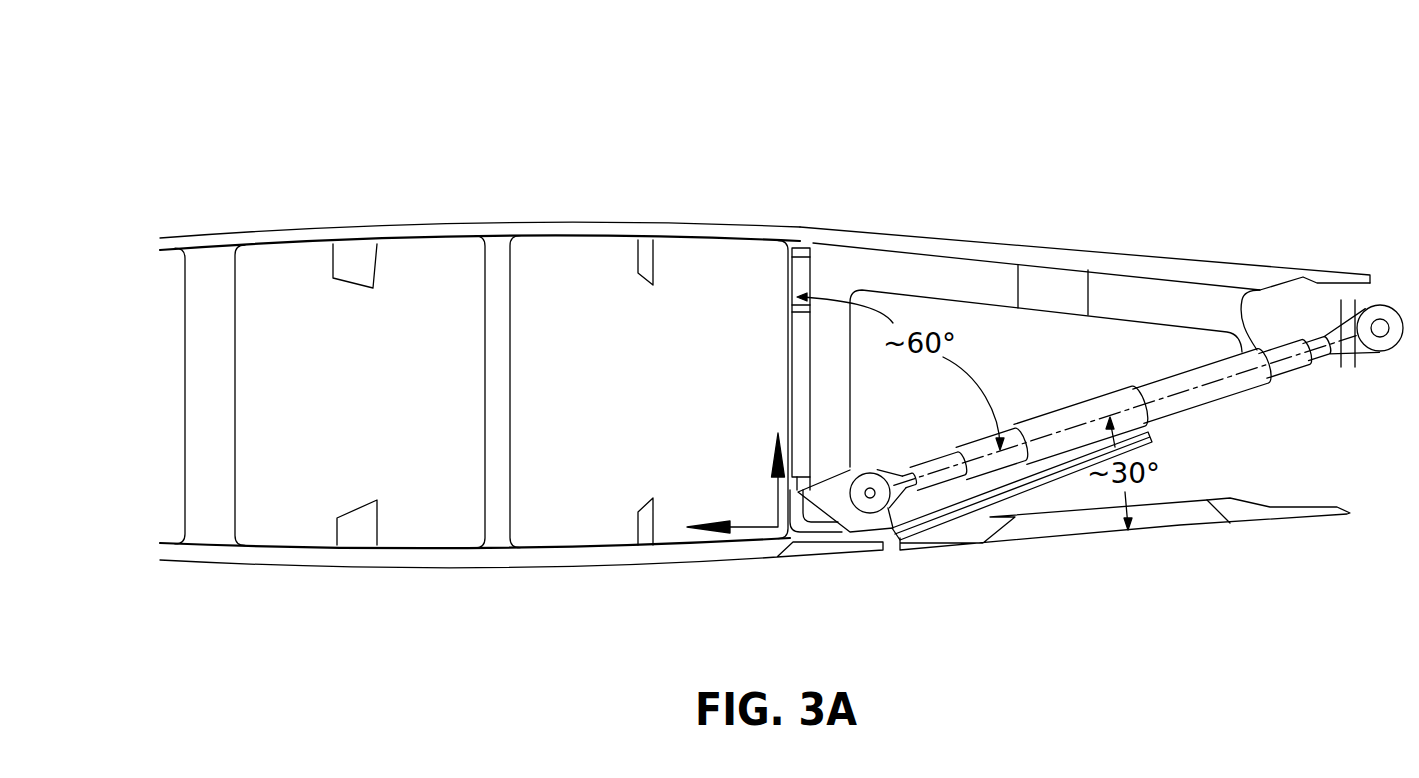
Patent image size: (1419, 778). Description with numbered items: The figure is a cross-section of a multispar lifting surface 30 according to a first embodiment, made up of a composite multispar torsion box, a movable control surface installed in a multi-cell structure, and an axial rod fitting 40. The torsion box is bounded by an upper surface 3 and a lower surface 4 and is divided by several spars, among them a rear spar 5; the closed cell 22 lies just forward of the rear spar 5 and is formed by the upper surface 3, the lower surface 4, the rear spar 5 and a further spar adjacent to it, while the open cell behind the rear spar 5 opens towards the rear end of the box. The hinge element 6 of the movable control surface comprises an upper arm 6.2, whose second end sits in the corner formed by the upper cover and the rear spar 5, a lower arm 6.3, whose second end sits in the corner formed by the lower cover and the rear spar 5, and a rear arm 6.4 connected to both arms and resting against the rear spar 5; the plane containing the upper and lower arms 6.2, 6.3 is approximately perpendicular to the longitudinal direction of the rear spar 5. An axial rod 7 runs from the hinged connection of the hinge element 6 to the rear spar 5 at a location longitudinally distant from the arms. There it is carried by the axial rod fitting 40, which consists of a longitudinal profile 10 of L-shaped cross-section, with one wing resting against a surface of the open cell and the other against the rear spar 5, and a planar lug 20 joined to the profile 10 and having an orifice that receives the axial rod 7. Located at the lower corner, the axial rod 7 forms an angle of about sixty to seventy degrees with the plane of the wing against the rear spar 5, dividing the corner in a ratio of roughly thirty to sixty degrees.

The multispar lifting surface 30 is at (330, 160).
The upper surface 3 is at (563, 226).
The lower surface 4 is at (492, 570).
The rear spar 5 is at (788, 358).
The closed cell 22 is at (722, 251).
The axial rod fitting 40 is at (730, 475).
The longitudinal profile 10 is at (827, 532).
The lug 20 is at (850, 470).
The axial rod 7 is at (1240, 388).
The hinge element 6 is at (1150, 290).
The upper arm 6.2 is at (973, 282).
The lower arm 6.3 is at (1172, 428).
The rear arm 6.4 is at (837, 363).